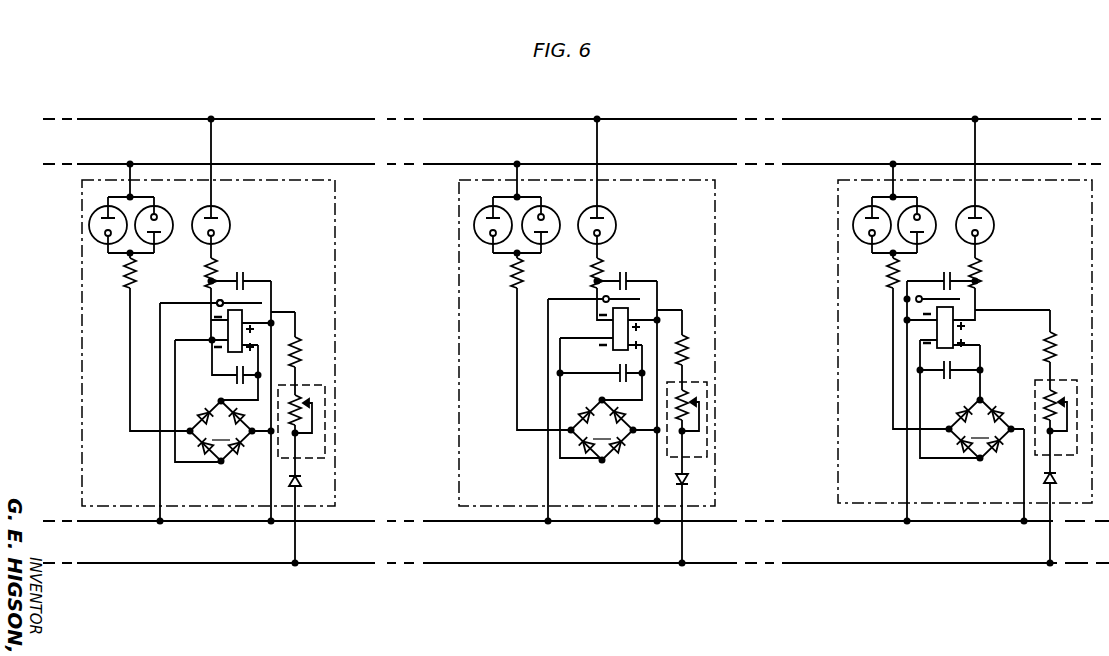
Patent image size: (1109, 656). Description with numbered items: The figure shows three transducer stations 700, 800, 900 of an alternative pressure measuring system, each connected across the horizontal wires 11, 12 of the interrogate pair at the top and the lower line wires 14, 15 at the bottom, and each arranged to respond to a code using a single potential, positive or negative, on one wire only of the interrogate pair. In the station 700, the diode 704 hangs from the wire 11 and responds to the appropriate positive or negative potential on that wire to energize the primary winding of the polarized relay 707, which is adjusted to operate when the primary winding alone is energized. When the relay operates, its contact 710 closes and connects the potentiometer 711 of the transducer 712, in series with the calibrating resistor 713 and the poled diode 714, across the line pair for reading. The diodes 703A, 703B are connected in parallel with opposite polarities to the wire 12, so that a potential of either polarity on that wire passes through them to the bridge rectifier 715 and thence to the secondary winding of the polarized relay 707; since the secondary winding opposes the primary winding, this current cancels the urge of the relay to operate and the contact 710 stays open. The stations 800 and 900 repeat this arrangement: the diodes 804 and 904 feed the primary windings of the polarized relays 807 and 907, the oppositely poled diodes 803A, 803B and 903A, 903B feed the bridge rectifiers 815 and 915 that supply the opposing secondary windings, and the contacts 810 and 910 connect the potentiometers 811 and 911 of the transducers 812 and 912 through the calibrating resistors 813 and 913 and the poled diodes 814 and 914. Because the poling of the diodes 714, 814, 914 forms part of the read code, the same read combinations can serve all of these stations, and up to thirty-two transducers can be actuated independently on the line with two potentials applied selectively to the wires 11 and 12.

The wire 11 is at (100, 119).
The wire 12 is at (96, 164).
The return bus line 14 is at (97, 522).
The return bus line 15 is at (92, 564).
The transducer station 700 is at (82, 297).
The diode 703A is at (100, 211).
The diode 703B is at (172, 208).
The diode 704 is at (230, 221).
The polarized relay 707 is at (228, 330).
The contact 710 is at (250, 314).
The potentiometer 711 is at (308, 402).
The transducer 712 is at (325, 456).
The calibrating resistor 713 is at (301, 352).
The poled diode 714 is at (303, 483).
The bridge rectifier 715 is at (221, 431).
The transducer station 800 is at (459, 297).
The diode 803A is at (485, 211).
The diode 803B is at (562, 208).
The diode 804 is at (616, 221).
The polarized relay 807 is at (613, 330).
The contact 810 is at (638, 312).
The potentiometer 811 is at (698, 406).
The transducer 812 is at (707, 456).
The calibrating resistor 813 is at (690, 350).
The poled diode 814 is at (690, 480).
The bridge rectifier 815 is at (602, 430).
The transducer station 900 is at (838, 297).
The diode 903A is at (864, 211).
The diode 903B is at (937, 208).
The diode 904 is at (994, 221).
The polarized relay 907 is at (955, 337).
The potentiometer 911 is at (1044, 396).
The transducer 912 is at (1035, 451).
The calibrating resistor 913 is at (1055, 340).
The poled diode 914 is at (1055, 476).
The bridge rectifier 915 is at (980, 429).